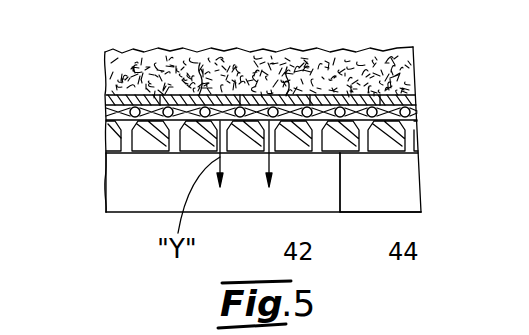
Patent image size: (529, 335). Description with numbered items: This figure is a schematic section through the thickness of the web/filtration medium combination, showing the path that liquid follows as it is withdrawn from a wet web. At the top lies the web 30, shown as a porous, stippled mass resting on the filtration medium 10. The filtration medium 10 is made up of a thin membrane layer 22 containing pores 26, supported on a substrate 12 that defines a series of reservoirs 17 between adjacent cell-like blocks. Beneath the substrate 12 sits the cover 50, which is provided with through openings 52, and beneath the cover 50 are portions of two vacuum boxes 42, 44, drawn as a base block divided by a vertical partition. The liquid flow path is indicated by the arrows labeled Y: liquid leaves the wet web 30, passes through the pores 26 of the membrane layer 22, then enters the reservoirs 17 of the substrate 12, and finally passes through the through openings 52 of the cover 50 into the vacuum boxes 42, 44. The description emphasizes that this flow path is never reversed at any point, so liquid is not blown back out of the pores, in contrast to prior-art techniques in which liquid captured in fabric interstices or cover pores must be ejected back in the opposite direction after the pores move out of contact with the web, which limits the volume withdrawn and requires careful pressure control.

The filtration medium 10 is at (107, 102).
The substrate 12 is at (414, 108).
The reservoirs 17 is at (240, 157).
The membrane layer 22 is at (413, 96).
The pores 26 is at (230, 97).
The web 30 is at (102, 76).
The vacuum box 42 is at (223, 182).
The vacuum box 44 is at (380, 182).
The cover 50 is at (416, 133).
The through openings 52 is at (175, 148).